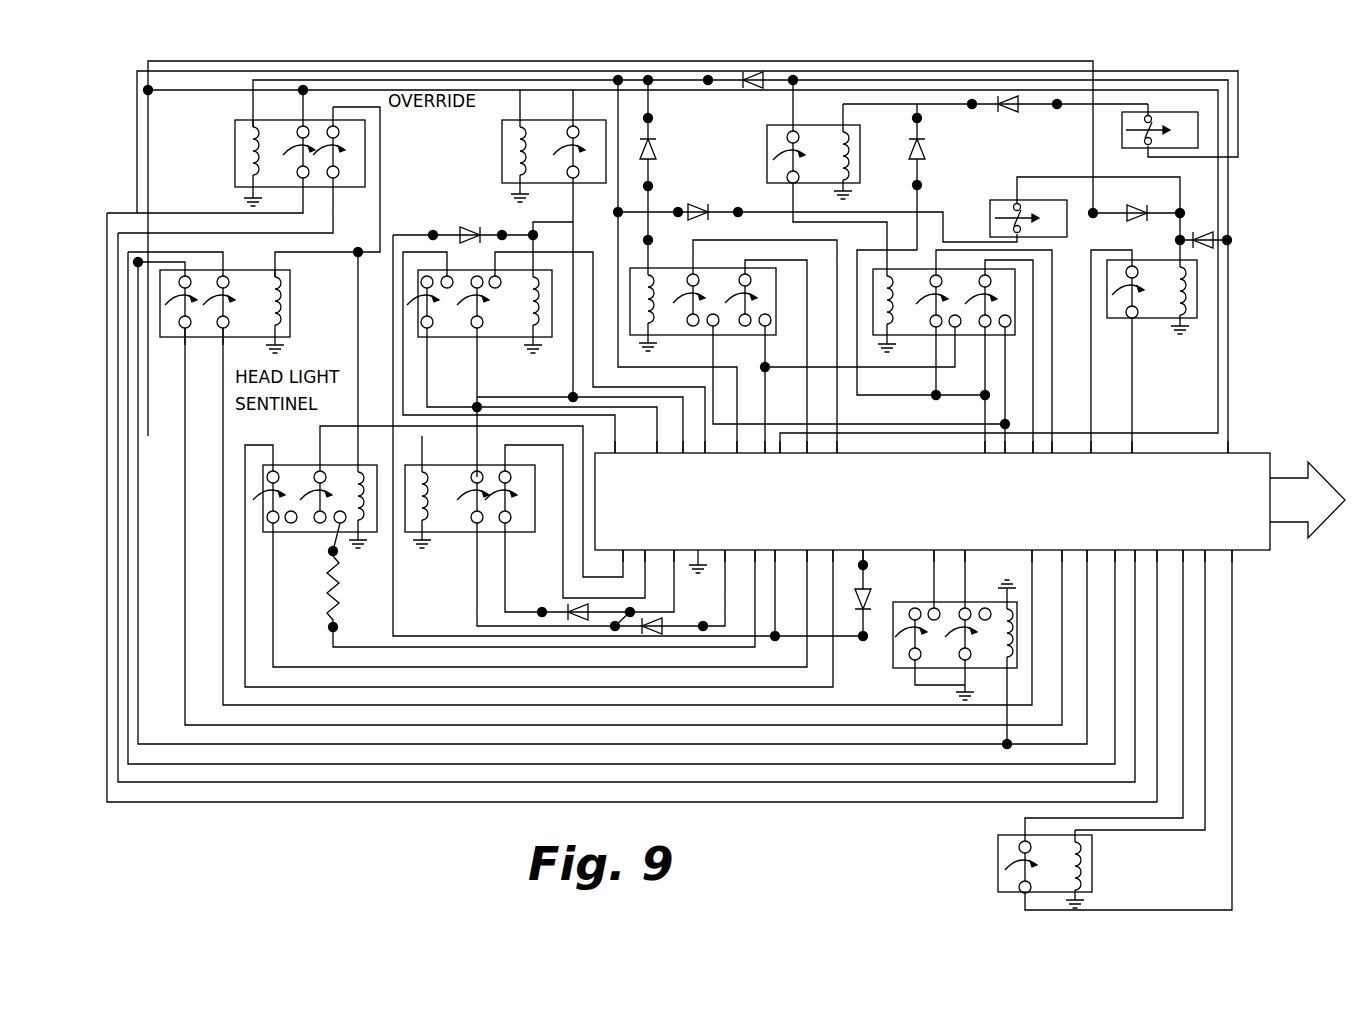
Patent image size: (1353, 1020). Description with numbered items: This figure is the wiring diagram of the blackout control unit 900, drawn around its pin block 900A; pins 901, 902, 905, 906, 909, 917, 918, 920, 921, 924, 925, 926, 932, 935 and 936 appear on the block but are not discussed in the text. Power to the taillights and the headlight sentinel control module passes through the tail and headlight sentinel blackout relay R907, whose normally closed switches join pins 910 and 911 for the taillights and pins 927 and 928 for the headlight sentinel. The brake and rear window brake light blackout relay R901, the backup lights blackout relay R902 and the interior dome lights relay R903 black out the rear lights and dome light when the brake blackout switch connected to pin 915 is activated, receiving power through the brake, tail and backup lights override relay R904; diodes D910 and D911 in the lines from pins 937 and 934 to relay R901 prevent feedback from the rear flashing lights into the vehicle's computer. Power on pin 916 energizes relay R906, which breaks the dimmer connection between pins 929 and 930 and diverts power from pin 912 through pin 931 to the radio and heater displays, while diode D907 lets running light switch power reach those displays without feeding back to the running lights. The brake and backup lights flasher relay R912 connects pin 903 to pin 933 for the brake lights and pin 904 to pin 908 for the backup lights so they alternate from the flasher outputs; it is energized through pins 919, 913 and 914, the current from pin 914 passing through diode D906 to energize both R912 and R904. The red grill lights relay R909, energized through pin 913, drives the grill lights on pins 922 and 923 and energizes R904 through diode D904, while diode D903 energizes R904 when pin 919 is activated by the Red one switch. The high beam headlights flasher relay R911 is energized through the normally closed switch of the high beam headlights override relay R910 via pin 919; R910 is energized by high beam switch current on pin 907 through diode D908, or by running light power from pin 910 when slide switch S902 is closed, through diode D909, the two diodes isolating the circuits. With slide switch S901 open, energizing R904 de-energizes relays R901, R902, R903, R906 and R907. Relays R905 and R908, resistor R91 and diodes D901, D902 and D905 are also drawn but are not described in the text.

The blackout control unit 900 is at (1248, 231).
The control unit terminal strip / connector 900A is at (1240, 452).
The terminal 901 is at (918, 545).
The terminal 902 is at (968, 545).
The pin connection 903 is at (627, 470).
The pin connection 904 is at (705, 460).
The terminal 905 is at (760, 460).
The terminal 906 is at (1007, 460).
The pin 907 is at (985, 470).
The pin 908 is at (683, 470).
The terminal 909 is at (780, 470).
The pin 910 is at (1090, 545).
The pin 911 is at (1065, 534).
The pin 912 is at (620, 545).
The pin 913 is at (733, 470).
The pin 914 is at (755, 534).
The pin 915 is at (1160, 534).
The pin 916 is at (1140, 545).
The terminal 917 is at (1208, 534).
The terminal 918 is at (1097, 460).
The pin 919 is at (1247, 460).
The terminal 920 (ground) 920 is at (705, 540).
The terminal 921 is at (1035, 470).
The pin 922 is at (808, 460).
The pin 923 is at (840, 470).
The terminal 924 is at (1185, 545).
The terminal 925 is at (1235, 545).
The terminal 926 is at (1148, 460).
The pin 927 is at (1040, 545).
The pin 928 is at (1115, 534).
The pin 929 is at (808, 534).
The pin 930 is at (832, 545).
The pin 931 is at (778, 545).
The terminal 932 is at (1052, 460).
The pin 933 is at (657, 460).
The pin 934 is at (730, 545).
The terminal 935 is at (873, 545).
The terminal 936 is at (647, 534).
The pin 937 is at (670, 545).
The brake and rear window brake light blackout relay R901 is at (565, 531).
The backup lights blackout relay R902 is at (561, 243).
The interior dome lights relay R903 is at (1144, 333).
The brake, tail and backup lights override relay R904 is at (241, 161).
The relay R905 is at (957, 647).
The relay R906 is at (539, 556).
The tail and headlight sentinel blackout relay R907 is at (236, 302).
The relay R908 is at (1082, 730).
The red grill lights relay R909 is at (817, 346).
The high beam headlights override relay R910 is at (833, 178).
The high beam headlights flasher relay R911 is at (962, 351).
The brake and backup lights flasher relay R912 is at (554, 364).
The resistor R91 is at (541, 597).
The diode D901 is at (1139, 201).
The diode D902 is at (1208, 225).
The diode D903 is at (745, 91).
The diode D904 is at (674, 177).
The diode D905 is at (816, 223).
The diode D906 is at (483, 241).
The diode D907 is at (892, 595).
The diode D908 is at (923, 252).
The diode D909 is at (995, 114).
The diode D910 is at (571, 602).
The diode D911 is at (671, 617).
The slide switch S901 is at (1085, 207).
The slide switch S902 is at (1164, 118).